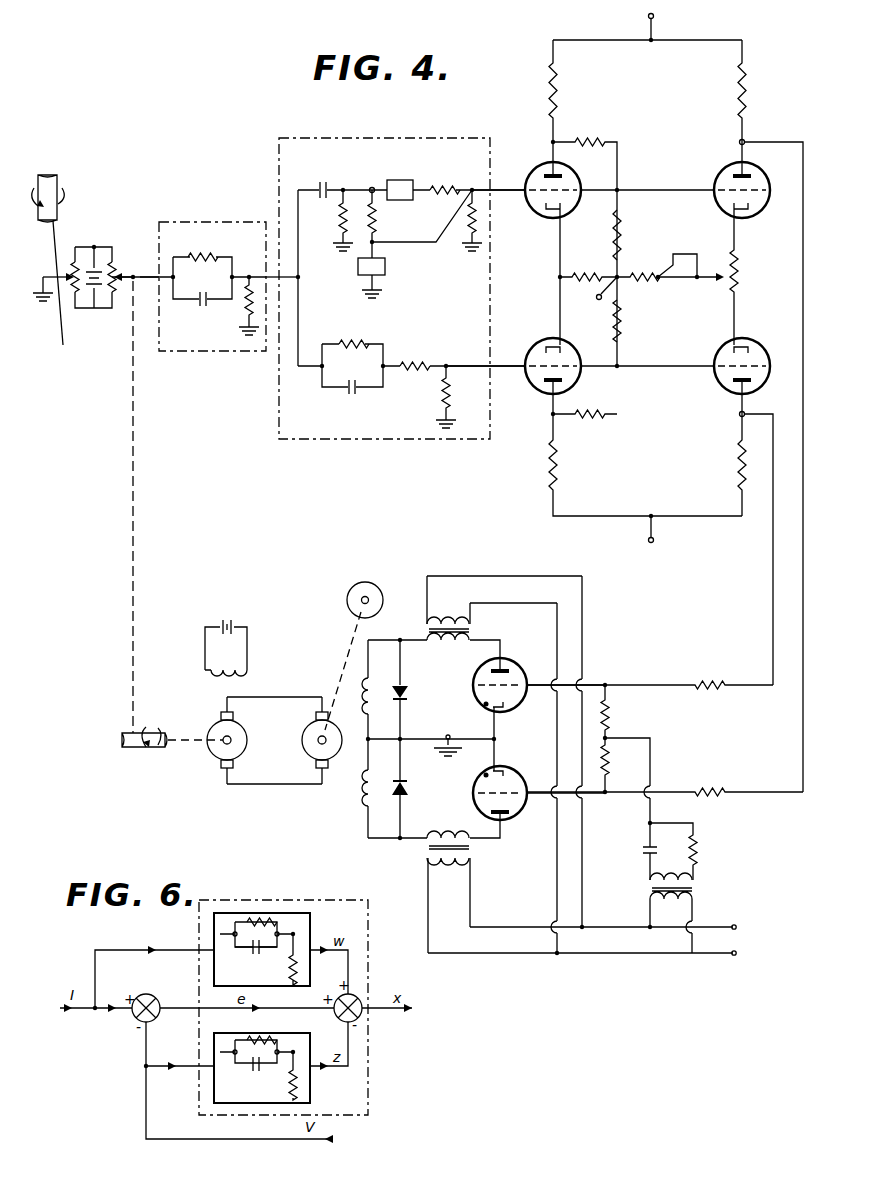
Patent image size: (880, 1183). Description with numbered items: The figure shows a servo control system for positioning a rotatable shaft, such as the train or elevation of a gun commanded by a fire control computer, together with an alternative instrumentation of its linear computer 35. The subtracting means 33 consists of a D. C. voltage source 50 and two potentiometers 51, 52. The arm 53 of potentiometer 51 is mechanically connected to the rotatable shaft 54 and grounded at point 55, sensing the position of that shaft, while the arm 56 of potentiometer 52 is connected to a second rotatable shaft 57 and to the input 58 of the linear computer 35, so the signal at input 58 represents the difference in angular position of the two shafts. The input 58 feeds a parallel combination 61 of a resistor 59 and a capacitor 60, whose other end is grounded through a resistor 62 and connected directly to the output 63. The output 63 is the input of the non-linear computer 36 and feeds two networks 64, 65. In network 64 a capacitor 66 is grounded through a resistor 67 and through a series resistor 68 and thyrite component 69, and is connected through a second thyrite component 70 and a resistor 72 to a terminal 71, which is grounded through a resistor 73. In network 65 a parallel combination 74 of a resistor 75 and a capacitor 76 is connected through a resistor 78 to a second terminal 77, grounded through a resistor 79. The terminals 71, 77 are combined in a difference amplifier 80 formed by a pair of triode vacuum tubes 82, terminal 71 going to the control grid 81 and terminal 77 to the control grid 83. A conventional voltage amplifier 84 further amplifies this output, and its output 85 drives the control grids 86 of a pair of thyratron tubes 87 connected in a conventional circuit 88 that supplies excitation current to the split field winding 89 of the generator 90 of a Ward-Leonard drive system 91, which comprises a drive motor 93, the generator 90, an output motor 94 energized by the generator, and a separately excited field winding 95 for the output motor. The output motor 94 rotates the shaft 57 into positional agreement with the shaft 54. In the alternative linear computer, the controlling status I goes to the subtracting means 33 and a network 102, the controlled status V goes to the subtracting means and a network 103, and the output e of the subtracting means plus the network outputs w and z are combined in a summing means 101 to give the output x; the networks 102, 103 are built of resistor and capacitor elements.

In FIG. 4, the subtracting means 33 is at (98, 270).
In FIG. 6, the subtracting means 33 is at (146, 994).
In FIG. 4, the linear computer 35 is at (212, 269).
In FIG. 6, the linear computer 35 is at (283, 990).
In FIG. 4, the non-linear computer 36 is at (404, 136).
In FIG. 4, the D. C. voltage source 50 is at (92, 286).
In FIG. 4, the potentiometer 51 is at (72, 270).
In FIG. 4, the potentiometer 52 is at (114, 272).
In FIG. 4, the arm 53 is at (64, 291).
In FIG. 4, the rotatable shaft 54 is at (55, 186).
In FIG. 4, the ground point 55 is at (43, 302).
In FIG. 4, the arm 56 is at (130, 281).
In FIG. 4, the second rotatable shaft 57 is at (132, 748).
In FIG. 4, the input 58 is at (152, 275).
In FIG. 4, the resistor 59 is at (203, 256).
In FIG. 4, the capacitor 60 is at (200, 304).
In FIG. 4, the parallel combination 61 is at (203, 283).
In FIG. 4, the resistor 62 is at (246, 305).
In FIG. 4, the output 63 is at (270, 274).
In FIG. 4, the network 64 is at (410, 225).
In FIG. 4, the network 65 is at (411, 372).
In FIG. 4, the capacitor 66 is at (319, 181).
In FIG. 4, the resistor 67 is at (340, 216).
In FIG. 4, the resistor 68 is at (378, 218).
In FIG. 4, the thyrite component 69 is at (385, 270).
In FIG. 4, the second thyrite component 70 is at (406, 180).
In FIG. 4, the terminal 71 is at (480, 190).
In FIG. 4, the resistor 72 is at (445, 185).
In FIG. 4, the resistor 73 is at (465, 226).
In FIG. 4, the parallel combination 74 is at (349, 369).
In FIG. 4, the resistor 75 is at (350, 344).
In FIG. 4, the capacitor 76 is at (350, 392).
In FIG. 4, the second terminal 77 is at (450, 366).
In FIG. 4, the resistor 78 is at (415, 352).
In FIG. 4, the resistor 79 is at (452, 392).
In FIG. 4, the difference amplifier 80 is at (622, 281).
In FIG. 4, the control grid 81 is at (526, 195).
In FIG. 4, the triode vacuum tubes 82 is at (547, 221).
In FIG. 4, the control grid 83 is at (531, 375).
In FIG. 4, the voltage amplifier 84 is at (781, 109).
In FIG. 4, the output 85 is at (803, 441).
In FIG. 4, the control grids 86 is at (519, 700).
In FIG. 4, the thyratron tubes 87 is at (473, 676).
In FIG. 4, the thyratron amplifier circuit 88 is at (568, 788).
In FIG. 4, the split field winding 89 is at (368, 677).
In FIG. 4, the generator 90 is at (327, 758).
In FIG. 4, the Ward-Leonard drive system 91 is at (270, 719).
In FIG. 4, the drive motor 93 is at (362, 582).
In FIG. 4, the output motor 94 is at (219, 734).
In FIG. 4, the field winding 95 is at (247, 670).
In FIG. 6, the summing means 101 is at (362, 994).
In FIG. 6, the linear integro-differential network 102 is at (312, 930).
In FIG. 6, the linear integro-differential network 103 is at (312, 1088).